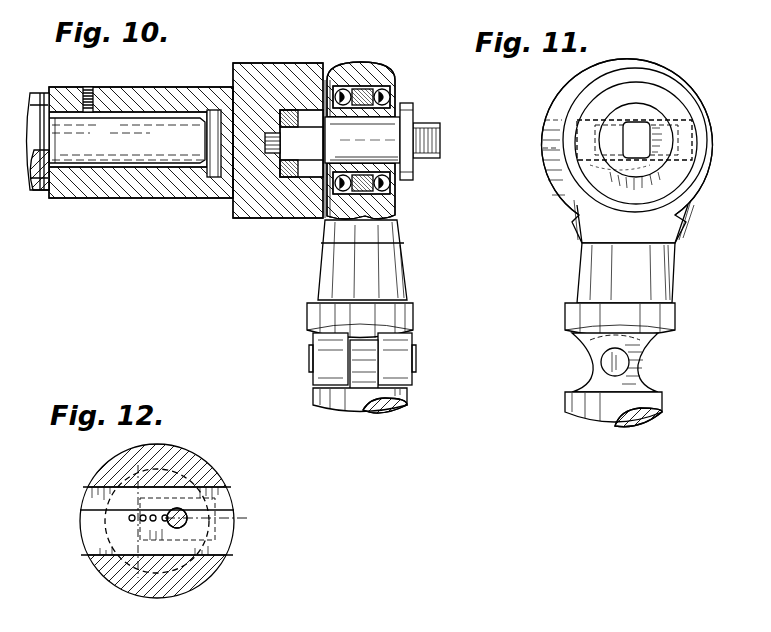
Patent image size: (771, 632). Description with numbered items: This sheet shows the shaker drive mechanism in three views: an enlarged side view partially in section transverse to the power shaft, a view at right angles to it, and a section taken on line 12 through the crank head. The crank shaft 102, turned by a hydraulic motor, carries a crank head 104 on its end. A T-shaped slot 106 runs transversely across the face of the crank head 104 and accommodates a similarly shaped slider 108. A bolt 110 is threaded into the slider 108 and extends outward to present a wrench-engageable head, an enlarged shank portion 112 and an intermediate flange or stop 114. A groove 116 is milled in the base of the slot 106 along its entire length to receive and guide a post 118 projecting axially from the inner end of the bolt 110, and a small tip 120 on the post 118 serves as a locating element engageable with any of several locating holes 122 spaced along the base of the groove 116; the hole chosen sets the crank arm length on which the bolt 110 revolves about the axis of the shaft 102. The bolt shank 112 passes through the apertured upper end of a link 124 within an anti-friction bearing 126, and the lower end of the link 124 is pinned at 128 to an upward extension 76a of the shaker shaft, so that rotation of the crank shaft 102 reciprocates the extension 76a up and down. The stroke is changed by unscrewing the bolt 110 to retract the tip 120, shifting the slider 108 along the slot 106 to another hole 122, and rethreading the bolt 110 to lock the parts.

In FIG. 10, the section line 12 is at (280, 58).
In FIG. 10, the upward extension of shaker shaft 76a is at (407, 398).
In FIG. 11, the upward extension of shaker shaft 76a is at (658, 408).
In FIG. 10, the crank shaft 102 is at (72, 213).
In FIG. 10, the crank head 104 is at (258, 218).
In FIG. 11, the crank head 104 is at (550, 183).
In FIG. 11, the T-shaped slot 106 is at (543, 160).
In FIG. 12, the T-shaped slot 106 is at (87, 540).
In FIG. 12, the slider 108 is at (232, 541).
In FIG. 10, the bolt 110 is at (302, 142).
In FIG. 11, the bolt 110 is at (640, 130).
In FIG. 10, the enlarged shank portion 112 is at (380, 131).
In FIG. 10, the intermediate flange or stop 114 is at (410, 122).
In FIG. 11, the intermediate flange or stop 114 is at (660, 177).
In FIG. 11, the groove 116 is at (543, 143).
In FIG. 12, the groove 116 is at (92, 522).
In FIG. 10, the post 118 is at (266, 143).
In FIG. 10, the tip 120 is at (228, 185).
In FIG. 12, the locating holes 122 is at (142, 523).
In FIG. 10, the link 124 is at (407, 262).
In FIG. 11, the link 124 is at (673, 288).
In FIG. 10, the anti-friction bearing 126 is at (392, 84).
In FIG. 10, the pin 128 is at (412, 362).
In FIG. 11, the pin 128 is at (629, 362).